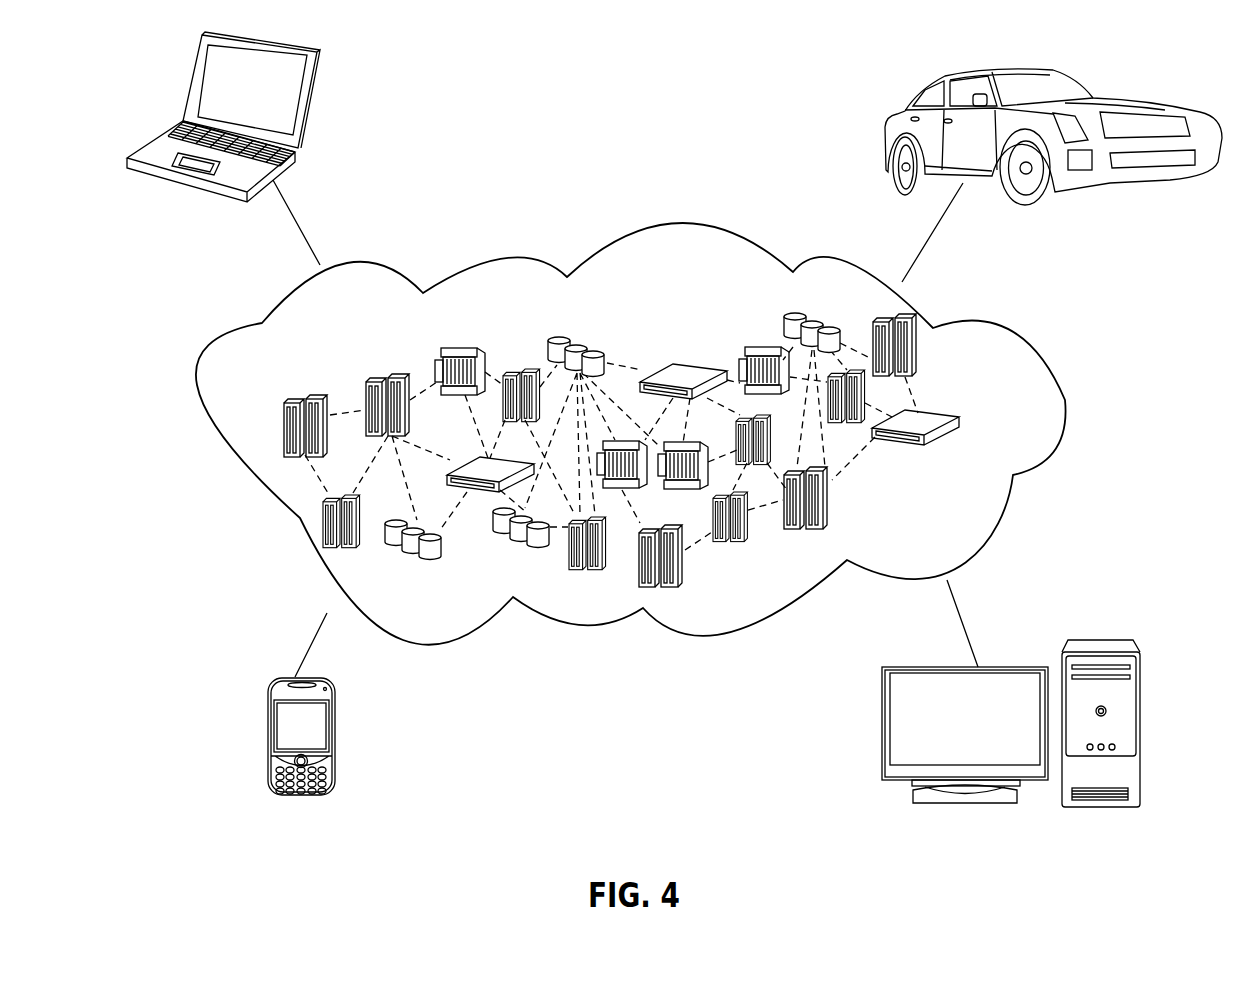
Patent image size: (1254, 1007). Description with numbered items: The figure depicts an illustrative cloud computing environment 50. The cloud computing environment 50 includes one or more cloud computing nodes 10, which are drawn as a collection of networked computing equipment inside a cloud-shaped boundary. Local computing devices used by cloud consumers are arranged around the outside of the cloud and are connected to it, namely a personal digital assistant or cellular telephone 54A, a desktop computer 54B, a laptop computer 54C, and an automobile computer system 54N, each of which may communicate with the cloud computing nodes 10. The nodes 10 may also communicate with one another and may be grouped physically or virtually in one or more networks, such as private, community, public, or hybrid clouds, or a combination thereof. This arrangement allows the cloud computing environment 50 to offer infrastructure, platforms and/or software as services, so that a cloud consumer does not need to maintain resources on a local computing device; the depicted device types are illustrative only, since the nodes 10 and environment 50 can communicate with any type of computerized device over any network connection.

The cloud computing environment 50 is at (1022, 340).
The cloud computing nodes 10 is at (1005, 426).
The personal digital assistant (PDA) or cellular telephone 54A is at (267, 740).
The desktop computer 54B is at (1105, 638).
The laptop computer 54C is at (307, 108).
The automobile computer system 54N is at (893, 112).